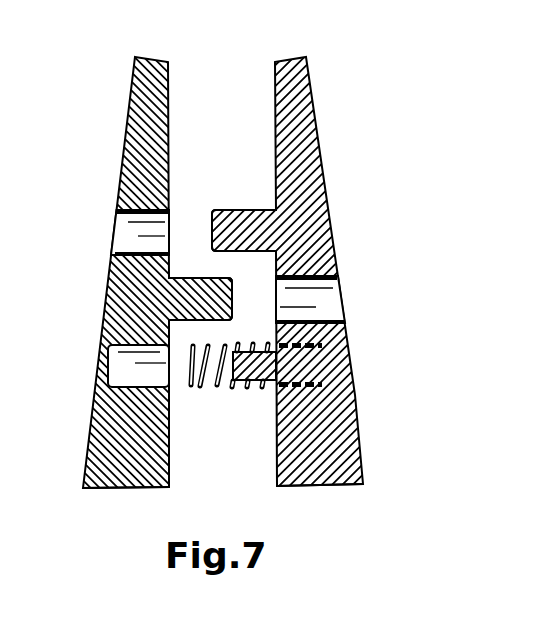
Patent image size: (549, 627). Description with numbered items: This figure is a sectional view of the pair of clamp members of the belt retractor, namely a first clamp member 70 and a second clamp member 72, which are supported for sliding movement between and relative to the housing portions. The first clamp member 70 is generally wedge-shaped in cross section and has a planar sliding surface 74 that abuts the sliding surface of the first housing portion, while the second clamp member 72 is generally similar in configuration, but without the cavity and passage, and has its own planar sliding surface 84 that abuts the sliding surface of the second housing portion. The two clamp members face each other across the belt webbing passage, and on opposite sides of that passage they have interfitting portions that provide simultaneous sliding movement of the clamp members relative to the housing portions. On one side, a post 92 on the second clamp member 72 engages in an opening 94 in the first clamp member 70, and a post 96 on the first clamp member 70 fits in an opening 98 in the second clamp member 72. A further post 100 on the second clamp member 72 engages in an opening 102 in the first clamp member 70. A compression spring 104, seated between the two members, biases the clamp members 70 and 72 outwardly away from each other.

The first clamp member 70 is at (126, 82).
The second clamp member 72 is at (283, 52).
The planar sliding surface 74 is at (90, 437).
The planar sliding surface 84 is at (363, 462).
The post 92 is at (247, 212).
The opening 94 is at (125, 219).
The post 96 is at (200, 300).
The opening 98 is at (310, 295).
The post 100 is at (252, 383).
The opening 102 is at (112, 362).
The compression spring 104 is at (216, 386).